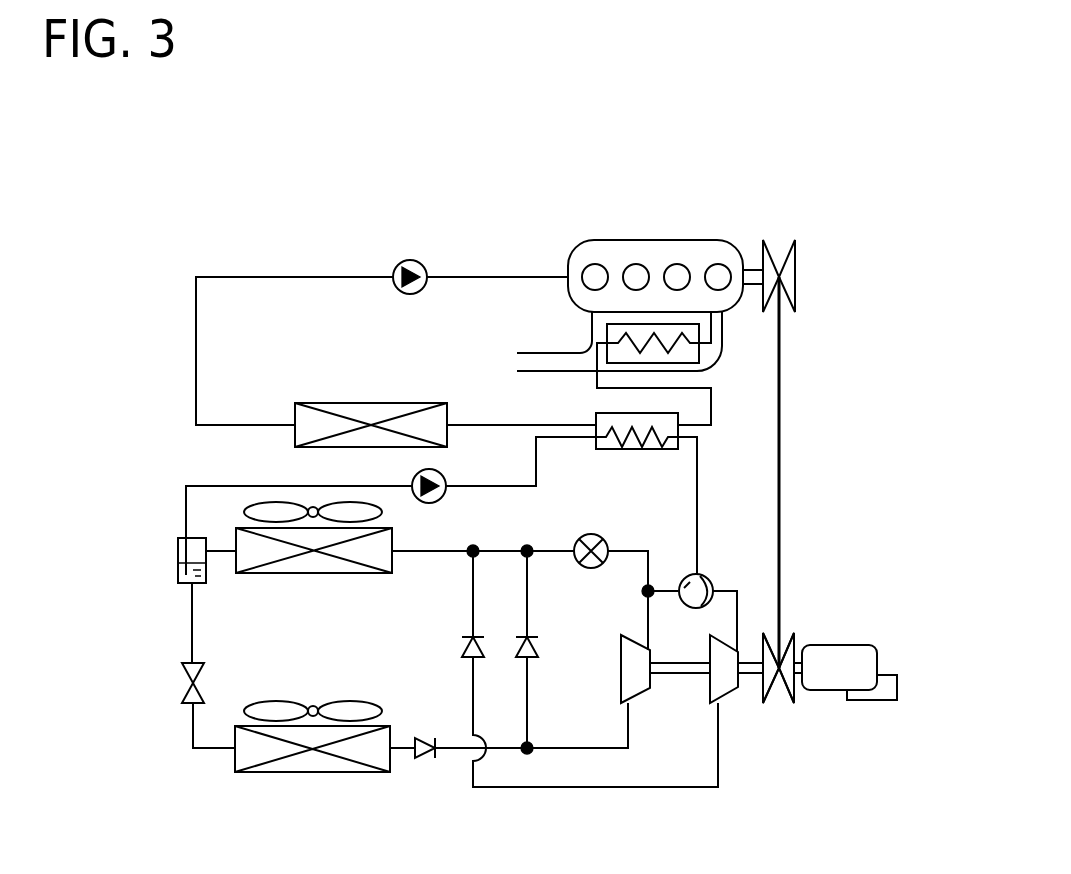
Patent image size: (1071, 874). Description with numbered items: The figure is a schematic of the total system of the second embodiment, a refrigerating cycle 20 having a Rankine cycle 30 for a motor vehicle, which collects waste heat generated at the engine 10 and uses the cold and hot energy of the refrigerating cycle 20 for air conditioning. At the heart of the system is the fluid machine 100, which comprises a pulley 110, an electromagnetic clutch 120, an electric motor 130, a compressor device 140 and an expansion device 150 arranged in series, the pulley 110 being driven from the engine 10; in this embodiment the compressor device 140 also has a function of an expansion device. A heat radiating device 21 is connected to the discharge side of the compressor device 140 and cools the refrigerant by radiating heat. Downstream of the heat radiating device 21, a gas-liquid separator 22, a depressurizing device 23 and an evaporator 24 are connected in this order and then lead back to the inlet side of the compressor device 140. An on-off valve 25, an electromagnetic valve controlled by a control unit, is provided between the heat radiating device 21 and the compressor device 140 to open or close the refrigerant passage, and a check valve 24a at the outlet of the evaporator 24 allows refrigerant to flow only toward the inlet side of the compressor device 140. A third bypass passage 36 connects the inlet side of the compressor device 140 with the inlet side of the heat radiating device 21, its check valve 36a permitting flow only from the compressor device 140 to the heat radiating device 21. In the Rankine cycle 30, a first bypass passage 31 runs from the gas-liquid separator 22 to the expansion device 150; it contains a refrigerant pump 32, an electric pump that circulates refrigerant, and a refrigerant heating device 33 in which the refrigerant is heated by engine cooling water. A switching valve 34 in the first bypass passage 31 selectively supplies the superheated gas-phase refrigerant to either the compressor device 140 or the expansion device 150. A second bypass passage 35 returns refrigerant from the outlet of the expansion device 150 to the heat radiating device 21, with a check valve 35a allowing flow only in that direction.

The engine 10 is at (648, 240).
The refrigerating cycle 20 is at (182, 618).
The heat radiating device 21 is at (310, 574).
The gas-liquid separator 22 is at (178, 568).
The depressurizing device 23 is at (182, 683).
The evaporator 24 is at (314, 773).
The check valve 24a is at (425, 762).
The on-off valve 25 is at (588, 534).
The Rankine cycle 30 is at (178, 500).
The first bypass passage 31 is at (487, 484).
The refrigerant pump 32 is at (440, 500).
The refrigerant heating device 33 is at (638, 450).
The switching valve 34 is at (706, 579).
The second bypass passage 35 is at (577, 790).
The check valve 35a is at (462, 647).
The third bypass passage 36 is at (529, 603).
The check valve 36a is at (530, 662).
The fluid machine 100 is at (882, 636).
The pulley 110 is at (793, 644).
The electromagnetic clutch 120 is at (778, 668).
The electric motor 130 is at (870, 660).
The compressor device 140 is at (620, 670).
The expansion device 150 is at (710, 652).